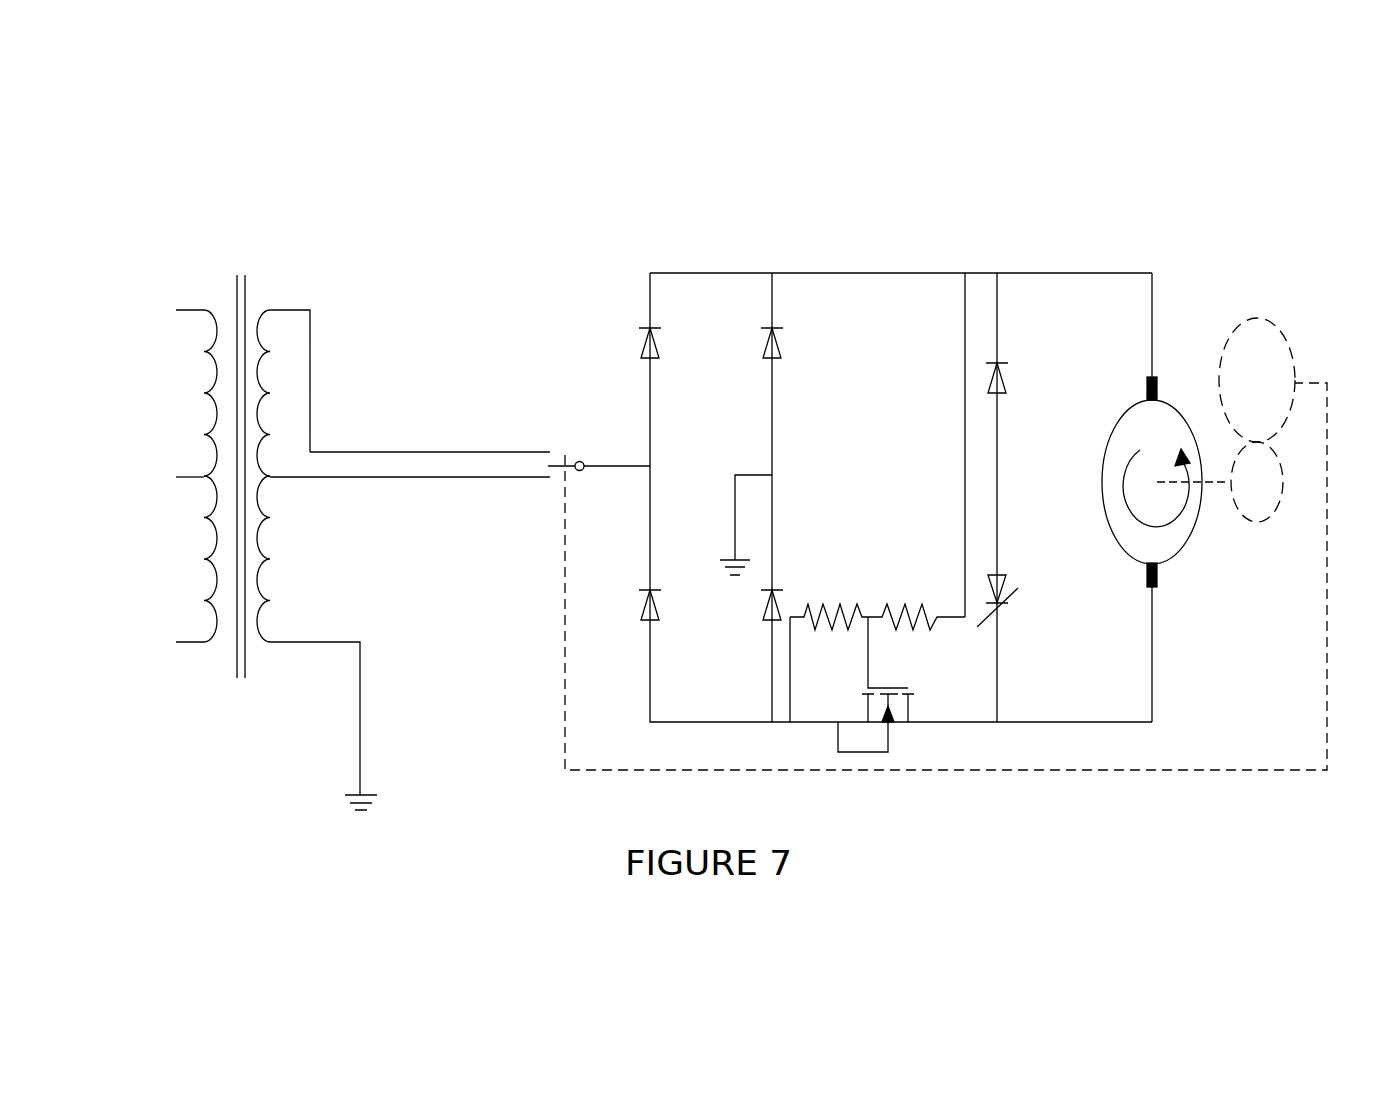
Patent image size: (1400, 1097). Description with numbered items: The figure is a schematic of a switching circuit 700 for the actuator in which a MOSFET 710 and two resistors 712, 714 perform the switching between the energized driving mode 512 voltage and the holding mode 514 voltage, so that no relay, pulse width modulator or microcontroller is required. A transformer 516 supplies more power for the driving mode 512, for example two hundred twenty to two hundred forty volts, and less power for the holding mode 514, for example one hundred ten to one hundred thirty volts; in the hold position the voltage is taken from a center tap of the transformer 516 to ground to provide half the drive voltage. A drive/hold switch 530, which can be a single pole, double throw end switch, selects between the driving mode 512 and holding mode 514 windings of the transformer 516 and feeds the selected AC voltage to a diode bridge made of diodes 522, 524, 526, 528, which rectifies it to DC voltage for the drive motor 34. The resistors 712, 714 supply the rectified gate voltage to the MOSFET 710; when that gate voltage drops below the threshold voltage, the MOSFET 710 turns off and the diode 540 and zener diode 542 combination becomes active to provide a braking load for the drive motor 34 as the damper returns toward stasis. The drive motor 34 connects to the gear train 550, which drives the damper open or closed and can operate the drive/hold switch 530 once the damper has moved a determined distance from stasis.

The transformer 516 is at (228, 232).
The driving mode 512 is at (340, 393).
The holding mode 514 is at (340, 643).
The switching circuit 700 is at (864, 220).
The drive/hold switch 530 is at (553, 490).
The diode 522 is at (665, 345).
The diode 524 is at (780, 341).
The diode 526 is at (665, 587).
The diode 528 is at (778, 588).
The diode 540 is at (1015, 377).
The zener diode 542 is at (1012, 582).
The resistor 712 is at (829, 604).
The resistor 714 is at (905, 604).
The MOSFET 710 is at (910, 752).
The drive motor 34 is at (1197, 519).
The gear train 550 is at (1292, 353).